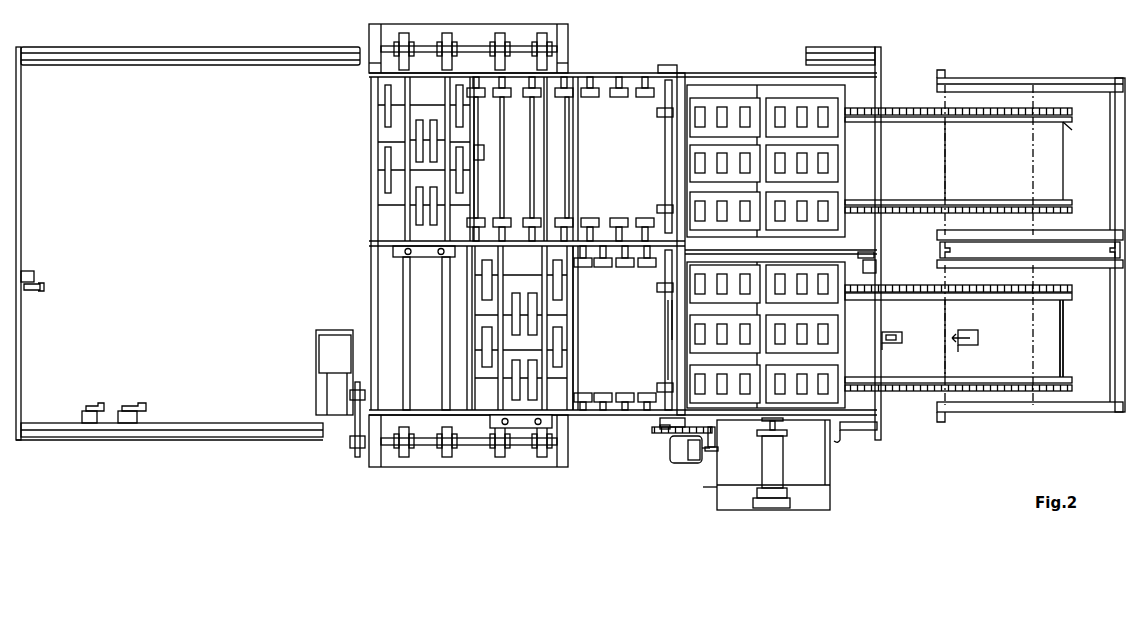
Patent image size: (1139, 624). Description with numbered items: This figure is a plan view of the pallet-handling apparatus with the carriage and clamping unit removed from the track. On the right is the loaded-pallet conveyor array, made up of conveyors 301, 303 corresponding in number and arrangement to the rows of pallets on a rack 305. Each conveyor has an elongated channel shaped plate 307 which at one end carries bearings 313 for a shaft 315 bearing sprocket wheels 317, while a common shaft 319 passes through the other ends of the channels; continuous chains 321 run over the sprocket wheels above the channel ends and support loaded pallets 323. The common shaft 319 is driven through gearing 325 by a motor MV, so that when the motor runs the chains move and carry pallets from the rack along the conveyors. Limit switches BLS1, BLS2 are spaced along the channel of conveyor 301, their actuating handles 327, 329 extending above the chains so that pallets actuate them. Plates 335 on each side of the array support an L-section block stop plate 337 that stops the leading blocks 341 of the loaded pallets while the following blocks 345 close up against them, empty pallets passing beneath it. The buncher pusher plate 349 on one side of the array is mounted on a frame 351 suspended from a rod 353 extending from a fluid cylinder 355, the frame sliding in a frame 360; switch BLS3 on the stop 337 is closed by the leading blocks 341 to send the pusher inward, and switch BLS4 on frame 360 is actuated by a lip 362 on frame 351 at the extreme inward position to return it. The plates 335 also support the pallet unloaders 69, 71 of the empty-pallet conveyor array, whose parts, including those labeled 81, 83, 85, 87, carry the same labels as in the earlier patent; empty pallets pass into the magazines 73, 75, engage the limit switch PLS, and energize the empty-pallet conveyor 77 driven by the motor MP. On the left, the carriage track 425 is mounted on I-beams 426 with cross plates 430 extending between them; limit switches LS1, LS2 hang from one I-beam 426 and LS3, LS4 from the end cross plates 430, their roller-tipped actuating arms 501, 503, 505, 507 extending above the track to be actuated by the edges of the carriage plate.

The I-beam 426 is at (255, 67).
The track 425 is at (266, 437).
The cross plate 430 is at (23, 393).
The limit switch LS3 is at (43, 265).
The actuating arm 505 is at (43, 286).
The limit switch LS2 is at (82, 412).
The actuating arm 503 is at (103, 404).
The limit switch LS1 is at (137, 415).
The actuating arm 501 is at (141, 396).
The empty pallet conveyor motor MP is at (349, 363).
The magazine 73 is at (433, 99).
The empty-pallet conveyor 77 is at (437, 367).
The magazine 75 is at (531, 268).
The pallet unloader 69 is at (626, 161).
The pallet unloader 71 is at (627, 333).
The limit switch PLS is at (484, 152).
The switch actuator 81 is at (648, 118).
The switch actuator 83 is at (648, 216).
The switch actuator 85 is at (647, 295).
The switch actuator 87 is at (647, 391).
The block stop plate 337 is at (676, 319).
The common shaft 319 is at (673, 344).
The leading block 341 is at (709, 100).
The following block 345 is at (805, 100).
The loaded pallet 323 is at (846, 160).
The plate 335 is at (877, 422).
The actuating arm 507 is at (866, 252).
The limit switch LS4 is at (876, 267).
The sprocket wheel 317 is at (1062, 121).
The continuous chain 321 is at (1066, 286).
The bearing 313 is at (1066, 378).
The rack 305 is at (1037, 80).
The conveyor 303 is at (1104, 174).
The conveyor 301 is at (1040, 347).
The channel shaped plate 307 is at (1055, 326).
The shaft 315 is at (1063, 340).
The limit switch BLS2 is at (912, 331).
The actuating handle 329 is at (884, 345).
The limit switch BLS1 is at (982, 329).
The actuating handle 327 is at (959, 346).
The frame 360 is at (833, 494).
The frame 351 is at (829, 456).
The fluid cylinder 355 is at (762, 468).
The rod 353 is at (783, 421).
The motor MV is at (680, 463).
The limit switch BLS4 is at (716, 437).
The gearing 325 is at (660, 434).
The limit switch BLS3 is at (658, 422).
The lip 362 is at (705, 485).
The pusher plate 349 is at (838, 442).